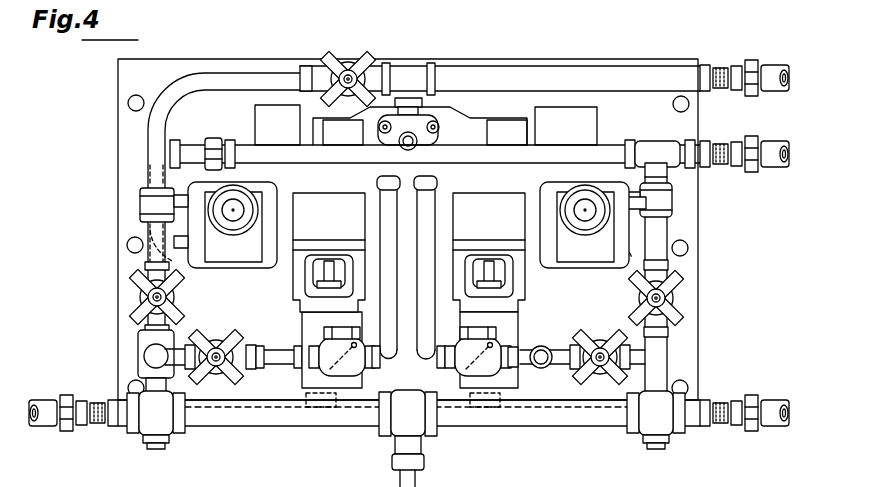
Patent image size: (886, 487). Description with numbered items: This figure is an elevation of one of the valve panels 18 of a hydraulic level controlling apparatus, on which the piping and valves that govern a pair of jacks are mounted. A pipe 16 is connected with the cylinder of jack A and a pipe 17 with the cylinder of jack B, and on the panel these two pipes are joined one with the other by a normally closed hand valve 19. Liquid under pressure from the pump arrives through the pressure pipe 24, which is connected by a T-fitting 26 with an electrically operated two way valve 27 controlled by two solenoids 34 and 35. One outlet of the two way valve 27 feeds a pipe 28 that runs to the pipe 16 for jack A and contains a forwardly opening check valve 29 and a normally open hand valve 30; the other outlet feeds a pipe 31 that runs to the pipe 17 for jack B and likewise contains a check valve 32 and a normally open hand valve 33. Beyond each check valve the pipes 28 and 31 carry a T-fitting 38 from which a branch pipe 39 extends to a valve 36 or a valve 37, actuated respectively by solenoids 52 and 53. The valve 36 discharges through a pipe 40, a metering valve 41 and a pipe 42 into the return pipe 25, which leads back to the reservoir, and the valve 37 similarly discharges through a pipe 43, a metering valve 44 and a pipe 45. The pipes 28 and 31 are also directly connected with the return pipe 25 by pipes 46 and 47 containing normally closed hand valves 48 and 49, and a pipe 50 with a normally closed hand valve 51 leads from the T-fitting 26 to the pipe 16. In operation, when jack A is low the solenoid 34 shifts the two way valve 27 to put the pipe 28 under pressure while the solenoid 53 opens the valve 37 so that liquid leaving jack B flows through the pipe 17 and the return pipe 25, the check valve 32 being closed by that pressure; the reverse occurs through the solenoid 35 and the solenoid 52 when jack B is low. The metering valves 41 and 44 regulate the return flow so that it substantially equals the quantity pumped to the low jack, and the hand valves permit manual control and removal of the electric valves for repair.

The pipe 16 is at (90, 402).
The pipe 17 is at (750, 422).
The valve panel 18 is at (628, 60).
The hand valve 19 is at (420, 425).
The pressure pipe 24 is at (700, 80).
The return pipe 25 is at (618, 152).
The T-fitting 26 is at (410, 80).
The two way valve 27 is at (423, 122).
The pipe 28 is at (388, 208).
The check valve 29 is at (346, 368).
The hand valve 30 is at (217, 340).
The pipe 31 is at (428, 223).
The check valve 32 is at (474, 368).
The hand valve 33 is at (602, 340).
The solenoid 34 is at (558, 118).
The solenoid 35 is at (276, 128).
The valve 36 is at (312, 326).
The valve 37 is at (506, 334).
The T-fitting 38 is at (542, 348).
The branch pipe 39 is at (278, 350).
The pipe 40 is at (238, 405).
The metering valve 41 is at (234, 268).
The pipe 42 is at (166, 200).
The pipe 43 is at (606, 410).
The metering valve 44 is at (590, 268).
The pipe 45 is at (660, 210).
The pipe 46 is at (150, 262).
The pipe 47 is at (667, 262).
The hand valve 48 is at (146, 302).
The hand valve 49 is at (670, 298).
The pipe 50 is at (188, 90).
The hand valve 51 is at (350, 58).
The solenoid 52 is at (322, 202).
The solenoid 53 is at (476, 204).